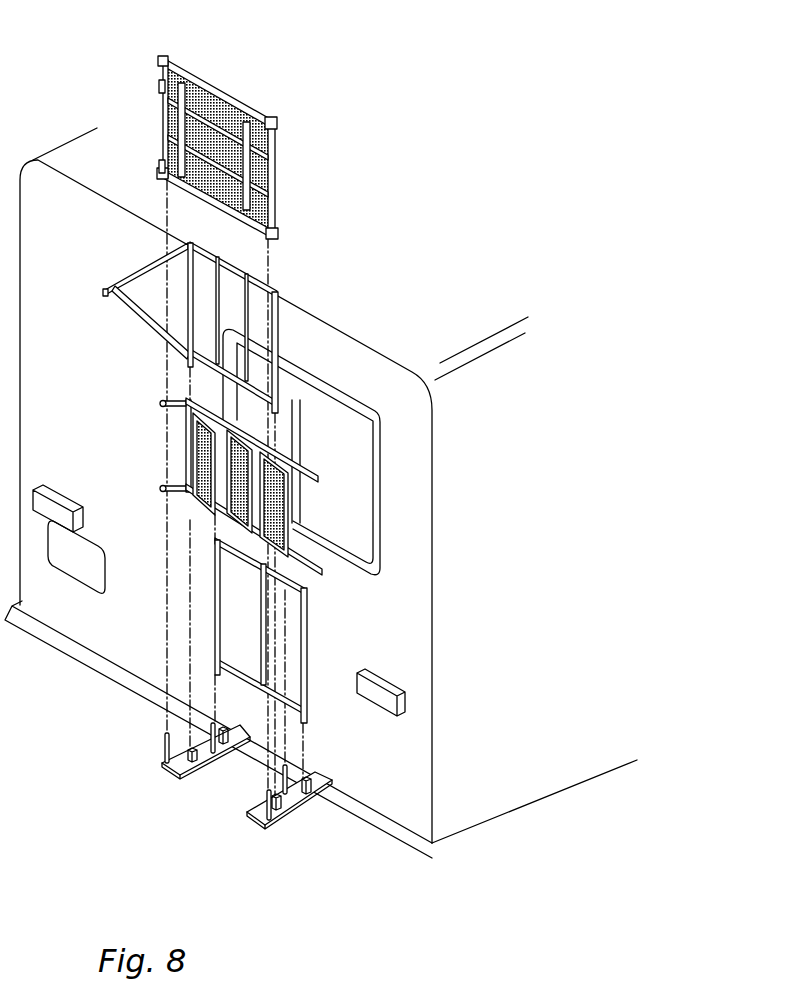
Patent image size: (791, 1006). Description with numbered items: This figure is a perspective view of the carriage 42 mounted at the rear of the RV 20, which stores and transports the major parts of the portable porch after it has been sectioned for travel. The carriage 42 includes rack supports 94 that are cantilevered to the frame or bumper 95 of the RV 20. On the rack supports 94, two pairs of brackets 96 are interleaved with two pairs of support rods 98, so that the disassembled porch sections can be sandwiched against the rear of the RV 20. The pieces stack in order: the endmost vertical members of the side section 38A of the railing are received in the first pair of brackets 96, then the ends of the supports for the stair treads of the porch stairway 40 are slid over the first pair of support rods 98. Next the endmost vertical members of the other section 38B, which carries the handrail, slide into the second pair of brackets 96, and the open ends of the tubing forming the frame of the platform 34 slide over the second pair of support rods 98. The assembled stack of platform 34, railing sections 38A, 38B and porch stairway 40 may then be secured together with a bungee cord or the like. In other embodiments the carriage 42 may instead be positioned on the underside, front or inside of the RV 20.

The RV 20 is at (433, 593).
The platform 34 is at (220, 90).
The side section 38A is at (311, 672).
The other section 38B is at (280, 330).
The porch stairway 40 is at (316, 471).
The carriage 42 is at (163, 769).
The rack supports 94 is at (197, 768).
The frame or bumper 95 is at (383, 851).
The brackets 96 is at (308, 812).
The support rods 98 is at (187, 713).